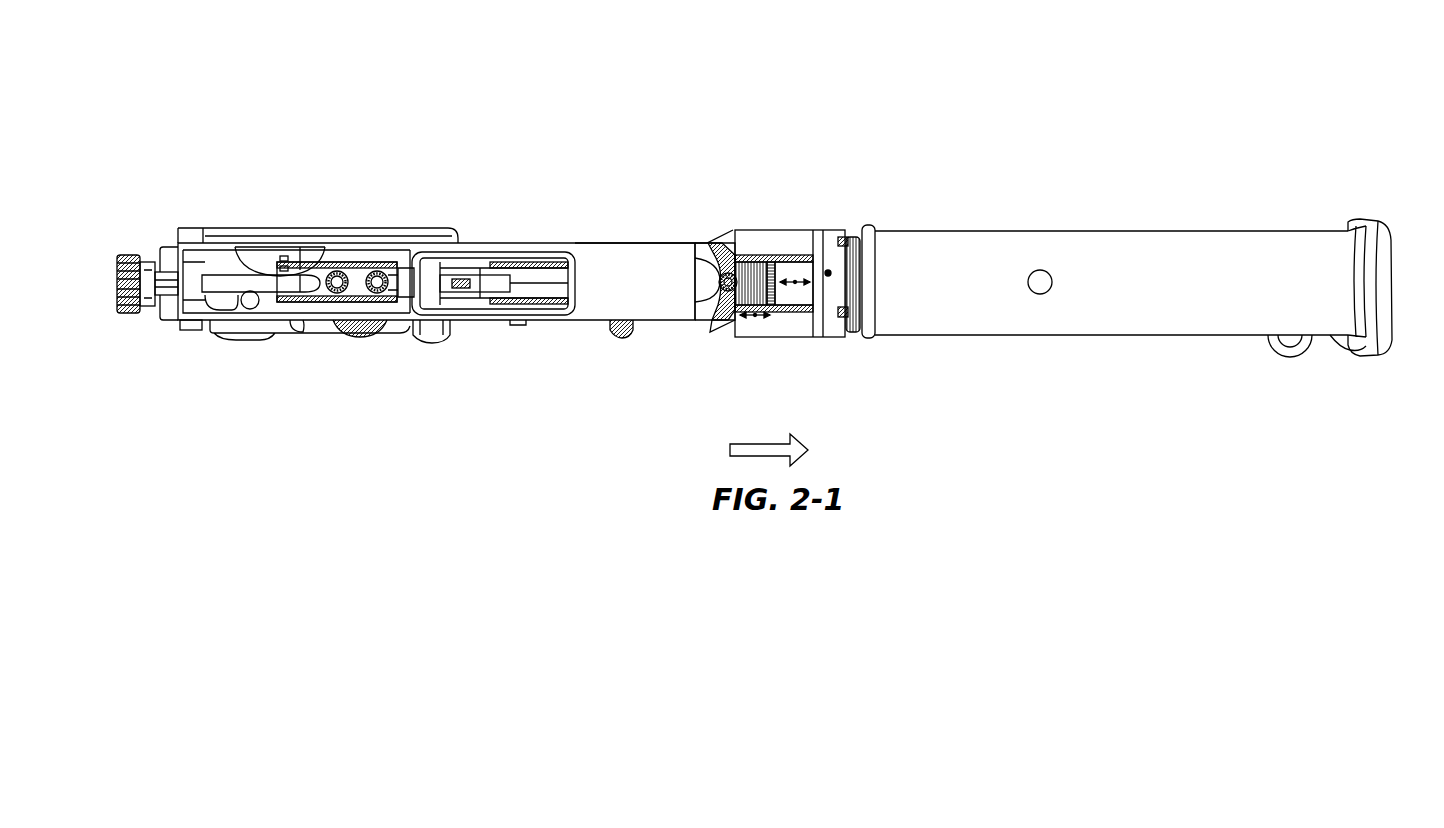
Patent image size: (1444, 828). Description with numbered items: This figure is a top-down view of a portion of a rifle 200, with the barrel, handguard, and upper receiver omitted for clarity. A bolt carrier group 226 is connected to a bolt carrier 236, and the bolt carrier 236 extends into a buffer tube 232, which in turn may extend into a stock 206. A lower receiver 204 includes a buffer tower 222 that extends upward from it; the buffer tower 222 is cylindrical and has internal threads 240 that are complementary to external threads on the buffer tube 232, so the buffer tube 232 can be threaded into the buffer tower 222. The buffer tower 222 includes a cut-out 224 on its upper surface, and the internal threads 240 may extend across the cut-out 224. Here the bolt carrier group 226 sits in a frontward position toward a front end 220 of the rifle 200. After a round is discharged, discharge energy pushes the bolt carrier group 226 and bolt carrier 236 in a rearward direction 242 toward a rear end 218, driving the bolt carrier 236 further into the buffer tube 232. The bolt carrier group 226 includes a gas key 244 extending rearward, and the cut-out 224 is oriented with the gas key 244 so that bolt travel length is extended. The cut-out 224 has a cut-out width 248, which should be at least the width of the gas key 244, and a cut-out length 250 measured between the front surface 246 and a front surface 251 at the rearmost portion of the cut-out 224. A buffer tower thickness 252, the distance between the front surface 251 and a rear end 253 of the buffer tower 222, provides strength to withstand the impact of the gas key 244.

The rifle 200 is at (1380, 70).
The lower receiver 204 is at (685, 238).
The buffer tube 206 is at (1086, 253).
The rear end 218 is at (1378, 211).
The front end 220 is at (122, 208).
The buffer tower 222 is at (749, 247).
The cut-out 224 is at (757, 268).
The bolt carrier group 226 is at (276, 238).
The buffer tube 232 is at (861, 250).
The bolt carrier 236 is at (610, 247).
The internal threads 240 is at (736, 323).
The rearward direction 242 is at (757, 443).
The gas key 244 is at (355, 250).
The front surface 246 is at (722, 313).
The cut-out width 248 is at (783, 312).
The cut-out length 250 is at (752, 318).
The front surface 251 is at (796, 275).
The buffer tower thickness 252 is at (778, 287).
The rear end 253 is at (830, 274).